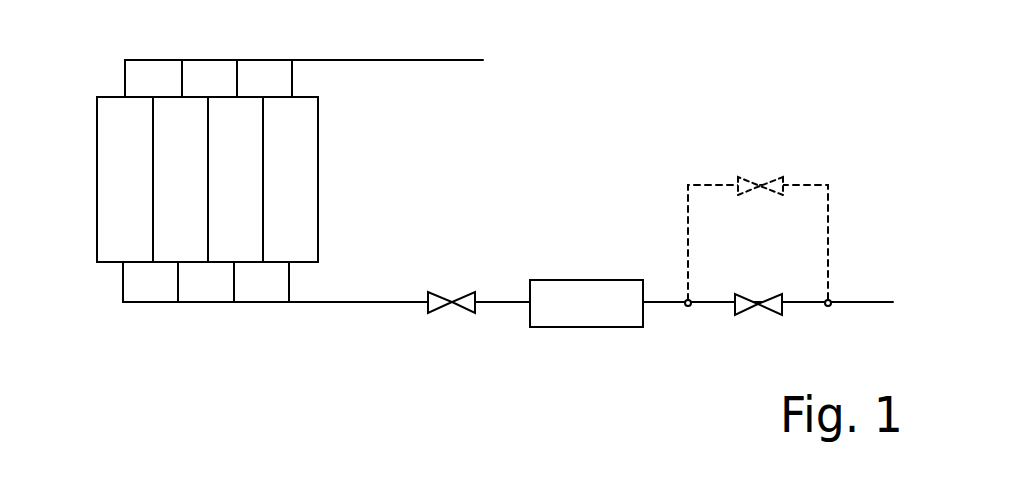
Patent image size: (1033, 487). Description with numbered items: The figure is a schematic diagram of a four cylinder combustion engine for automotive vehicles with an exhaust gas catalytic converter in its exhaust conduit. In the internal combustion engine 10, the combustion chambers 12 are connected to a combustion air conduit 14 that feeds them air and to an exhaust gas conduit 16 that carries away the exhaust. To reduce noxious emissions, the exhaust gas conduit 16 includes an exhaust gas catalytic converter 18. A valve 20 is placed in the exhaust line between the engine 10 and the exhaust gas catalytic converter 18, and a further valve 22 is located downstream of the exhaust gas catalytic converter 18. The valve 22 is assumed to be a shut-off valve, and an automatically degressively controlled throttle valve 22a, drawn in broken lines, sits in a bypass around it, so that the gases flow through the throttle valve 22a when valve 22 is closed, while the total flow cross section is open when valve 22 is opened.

The internal combustion engine 10 is at (295, 178).
The combustion chambers 12 is at (115, 150).
The combustion air conduit 14 is at (215, 59).
The exhaust gas conduit 16 is at (312, 303).
The exhaust gas catalytic converter 18 is at (588, 280).
The valve 20 is at (447, 292).
The further valve 22 is at (752, 298).
The throttle valve 22a is at (752, 180).